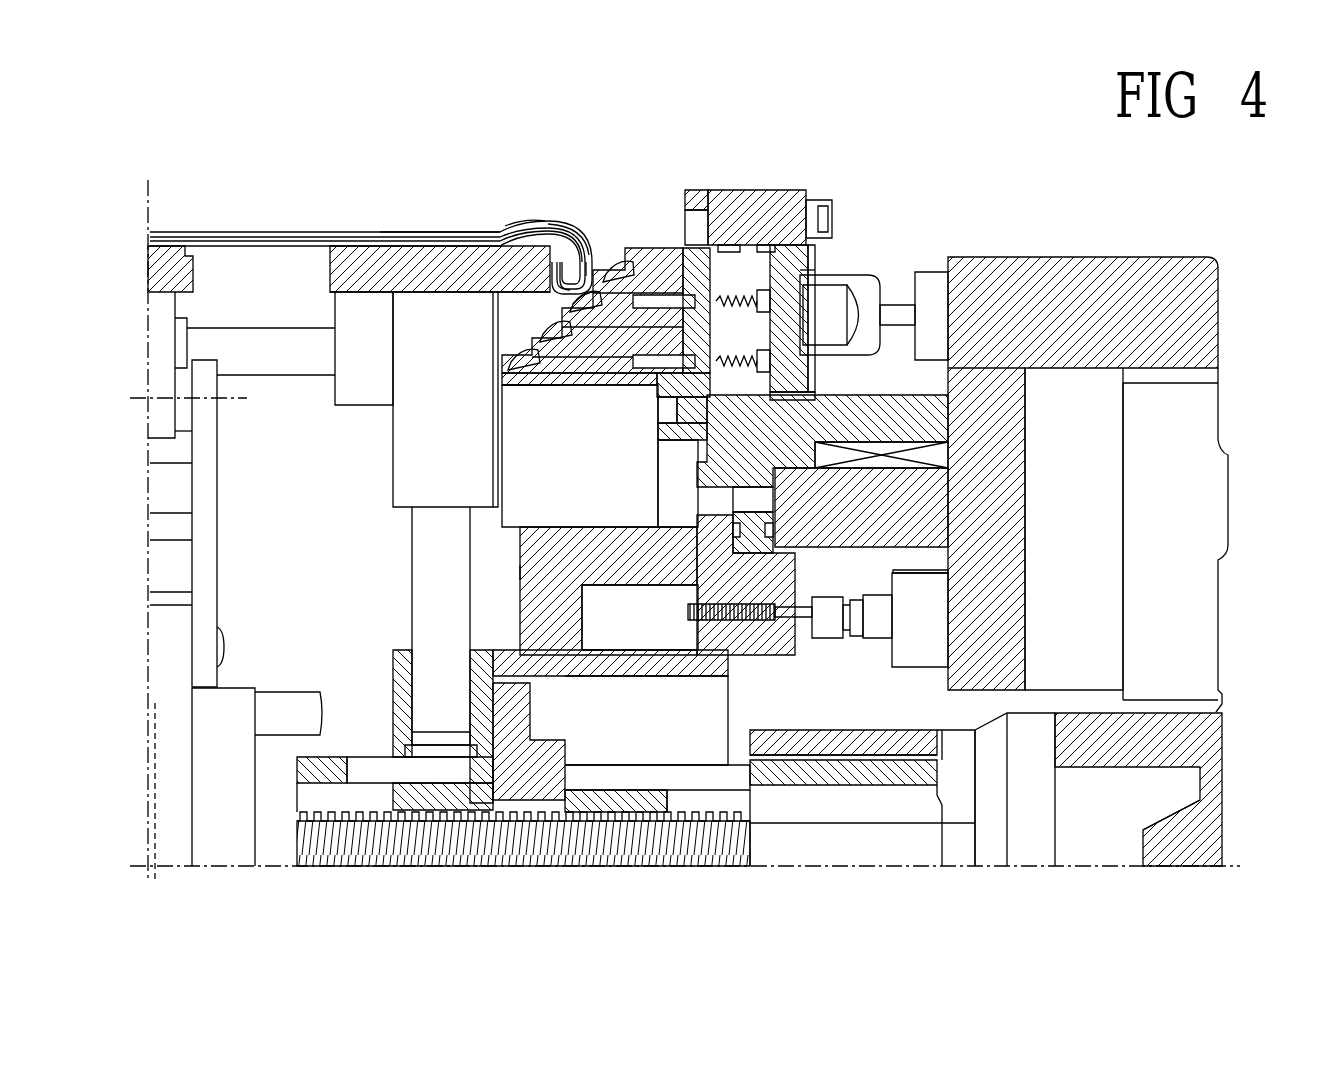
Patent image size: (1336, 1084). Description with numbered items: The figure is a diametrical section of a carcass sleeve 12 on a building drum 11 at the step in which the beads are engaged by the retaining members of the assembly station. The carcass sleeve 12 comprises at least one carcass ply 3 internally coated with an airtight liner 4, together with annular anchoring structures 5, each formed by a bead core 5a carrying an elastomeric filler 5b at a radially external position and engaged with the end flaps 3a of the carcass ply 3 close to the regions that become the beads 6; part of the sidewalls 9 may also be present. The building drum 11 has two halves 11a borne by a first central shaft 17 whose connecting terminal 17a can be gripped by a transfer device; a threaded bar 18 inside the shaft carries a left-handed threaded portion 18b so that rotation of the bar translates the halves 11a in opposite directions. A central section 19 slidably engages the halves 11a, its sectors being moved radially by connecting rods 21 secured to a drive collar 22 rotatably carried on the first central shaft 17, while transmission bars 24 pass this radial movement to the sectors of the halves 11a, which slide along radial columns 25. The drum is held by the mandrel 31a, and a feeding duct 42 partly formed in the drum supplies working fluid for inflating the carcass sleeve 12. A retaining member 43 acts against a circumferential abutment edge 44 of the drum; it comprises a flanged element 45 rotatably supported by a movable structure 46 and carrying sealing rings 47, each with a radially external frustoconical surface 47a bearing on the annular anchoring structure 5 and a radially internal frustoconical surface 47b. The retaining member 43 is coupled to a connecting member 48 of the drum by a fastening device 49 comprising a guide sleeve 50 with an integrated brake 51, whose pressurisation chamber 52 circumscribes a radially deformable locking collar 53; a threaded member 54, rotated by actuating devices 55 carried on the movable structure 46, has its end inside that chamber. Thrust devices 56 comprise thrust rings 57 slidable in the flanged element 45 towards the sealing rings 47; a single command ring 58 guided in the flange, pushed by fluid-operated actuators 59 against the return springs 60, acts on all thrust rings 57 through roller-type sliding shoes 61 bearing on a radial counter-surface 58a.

The carcass ply 3 is at (285, 232).
The end flaps 3a is at (500, 232).
The liner 4 is at (226, 234).
The annular anchoring structures 5 is at (572, 238).
The bead core 5a is at (587, 260).
The elastomeric filler 5b is at (548, 226).
The beads 6 is at (545, 233).
The sidewalls 9 is at (393, 234).
The building drum 11 is at (130, 242).
The halves 11a is at (366, 270).
The carcass sleeve 12 is at (346, 230).
The first central shaft 17 is at (870, 748).
The connecting terminal 17a is at (1103, 827).
The threaded bar 18 is at (800, 850).
The threaded portion 18b is at (455, 850).
The central section 19 is at (172, 258).
The connecting rods 21 is at (203, 495).
The drive collar 22 is at (172, 660).
The transmission bars 24 is at (285, 353).
The columns 25 is at (432, 618).
The mandrel 31a is at (1182, 743).
The feeding duct 42 is at (157, 803).
The retaining member 43 is at (748, 178).
The circumferential abutment edge 44 is at (610, 262).
The flanged element 45 is at (706, 200).
The movable structure 46 is at (1157, 320).
The sealing ring 47 is at (540, 336).
The radially external frustoconical surface 47a is at (568, 305).
The radially internal frustoconical surface 47b is at (548, 387).
The connecting member 48 is at (693, 662).
The fastening device 49 is at (506, 570).
The guide sleeve 50 is at (582, 543).
The brake 51 is at (636, 572).
The pressurisation chamber 52 is at (612, 621).
The locking collar 53 is at (620, 665).
The threaded member 54 is at (745, 632).
The actuating devices 55 is at (906, 633).
The thrust devices 56 is at (1081, 228).
The thrust ring 57 is at (659, 250).
The command ring 58 is at (772, 250).
The retainer flange 58a is at (806, 272).
The fluid-operated actuators 59 is at (938, 315).
The return springs 60 is at (737, 285).
The sliding shoes 61 is at (840, 312).